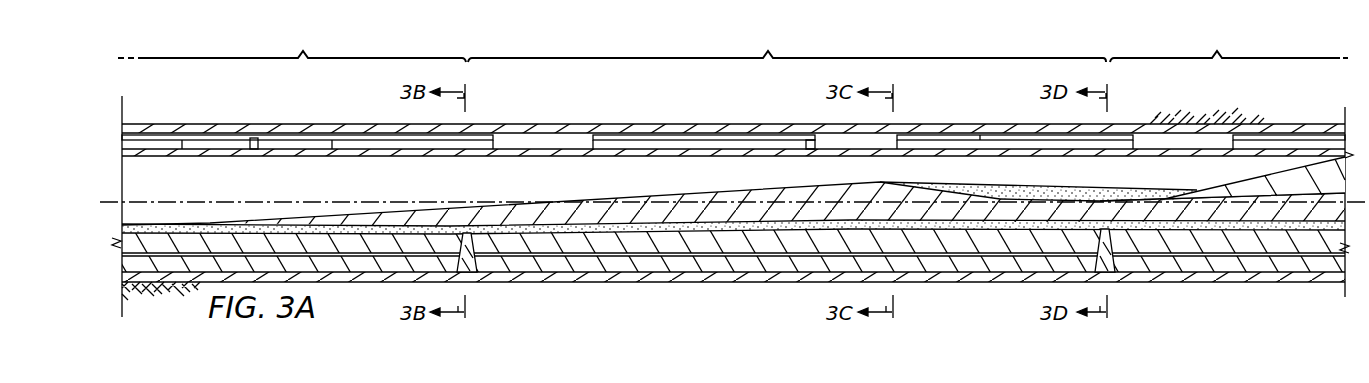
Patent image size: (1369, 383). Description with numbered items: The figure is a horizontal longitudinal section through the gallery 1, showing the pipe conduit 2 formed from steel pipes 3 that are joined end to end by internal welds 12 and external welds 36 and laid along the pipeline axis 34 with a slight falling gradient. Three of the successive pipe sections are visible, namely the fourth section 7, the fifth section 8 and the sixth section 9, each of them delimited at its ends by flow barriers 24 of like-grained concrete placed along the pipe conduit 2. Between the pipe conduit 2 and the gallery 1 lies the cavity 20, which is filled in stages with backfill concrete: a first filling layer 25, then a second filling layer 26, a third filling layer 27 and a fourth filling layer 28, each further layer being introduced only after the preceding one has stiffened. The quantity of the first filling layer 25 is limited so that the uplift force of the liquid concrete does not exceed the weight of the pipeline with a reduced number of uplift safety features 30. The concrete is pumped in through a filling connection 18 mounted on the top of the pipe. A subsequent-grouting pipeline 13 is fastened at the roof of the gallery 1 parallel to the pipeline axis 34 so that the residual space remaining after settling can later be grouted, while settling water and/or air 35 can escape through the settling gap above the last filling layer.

The gallery 1 is at (368, 125).
The pipe conduit 2 is at (527, 150).
The steel pipe 3 is at (560, 150).
The fourth section 7 is at (1229, 44).
The fifth section 8 is at (787, 44).
The sixth section 9 is at (292, 44).
The internal weld 12 is at (240, 158).
The subsequent-grouting pipeline 13 is at (690, 135).
The filling connection 18 is at (273, 145).
The cavity 20 is at (585, 145).
The flow barrier 24 is at (480, 270).
The first filling layer 25 is at (1180, 245).
The second filling layer 26 is at (570, 225).
The third filling layer 27 is at (1295, 215).
The fourth filling layer 28 is at (1305, 178).
The uplift safety feature 30 is at (810, 150).
The pipeline axis 34 is at (415, 198).
The settling water and/or air 35 is at (1155, 185).
The external welds 36 is at (148, 140).